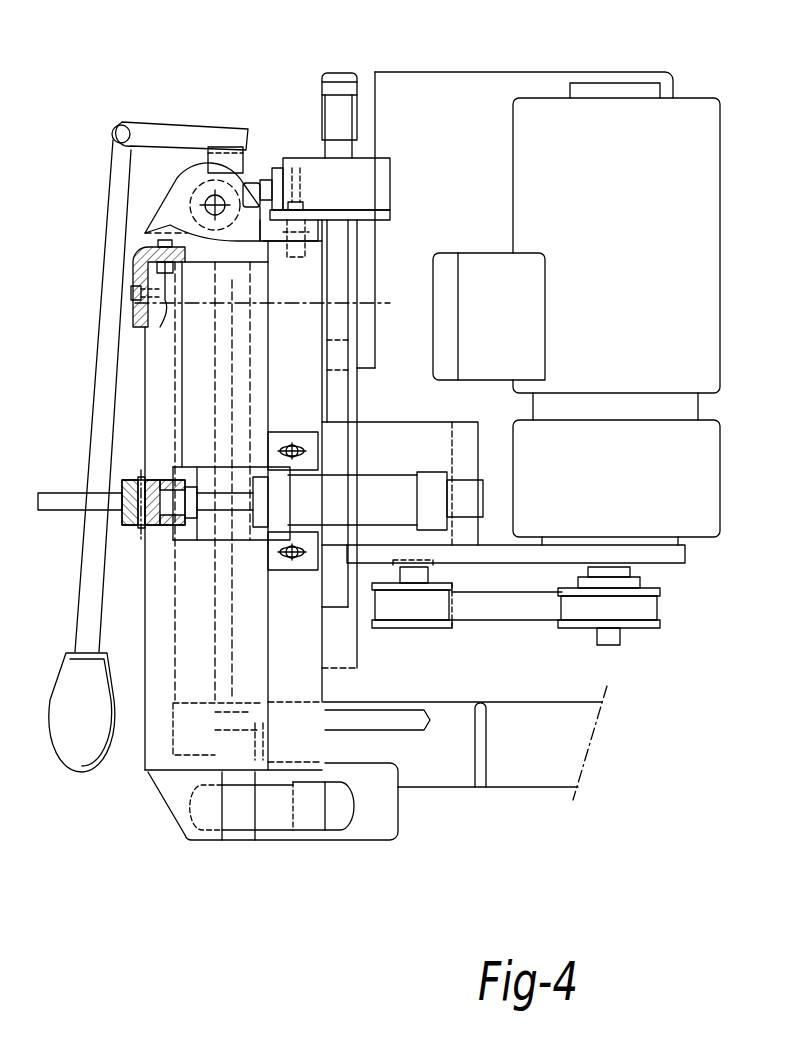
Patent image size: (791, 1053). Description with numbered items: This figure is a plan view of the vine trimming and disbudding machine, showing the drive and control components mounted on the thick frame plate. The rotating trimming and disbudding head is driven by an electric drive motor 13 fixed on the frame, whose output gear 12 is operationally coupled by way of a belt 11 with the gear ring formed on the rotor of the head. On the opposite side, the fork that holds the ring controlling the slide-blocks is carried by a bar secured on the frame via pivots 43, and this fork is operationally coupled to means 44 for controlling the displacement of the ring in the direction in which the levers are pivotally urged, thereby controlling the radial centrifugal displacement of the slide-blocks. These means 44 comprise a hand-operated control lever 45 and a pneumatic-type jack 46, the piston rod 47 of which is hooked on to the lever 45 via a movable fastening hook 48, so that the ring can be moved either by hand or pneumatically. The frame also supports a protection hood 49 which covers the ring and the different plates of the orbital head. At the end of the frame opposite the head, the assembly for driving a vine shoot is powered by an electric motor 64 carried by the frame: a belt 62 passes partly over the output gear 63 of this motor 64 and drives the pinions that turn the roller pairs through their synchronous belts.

The belt 11 is at (343, 138).
The output gear 12 is at (322, 140).
The electric drive motor 13 is at (510, 74).
The pivots 43 is at (204, 200).
The means for controlling the displacement of the ring 44 is at (166, 118).
The hand-operated control lever 45 is at (85, 581).
The pneumatic-type jack 46 is at (377, 488).
The piston rod 47 is at (232, 522).
The movable fastening hook 48 is at (57, 492).
The protection hood 49 is at (150, 768).
The belt 62 is at (538, 612).
The output gear 63 is at (652, 628).
The electric motor 64 is at (624, 176).